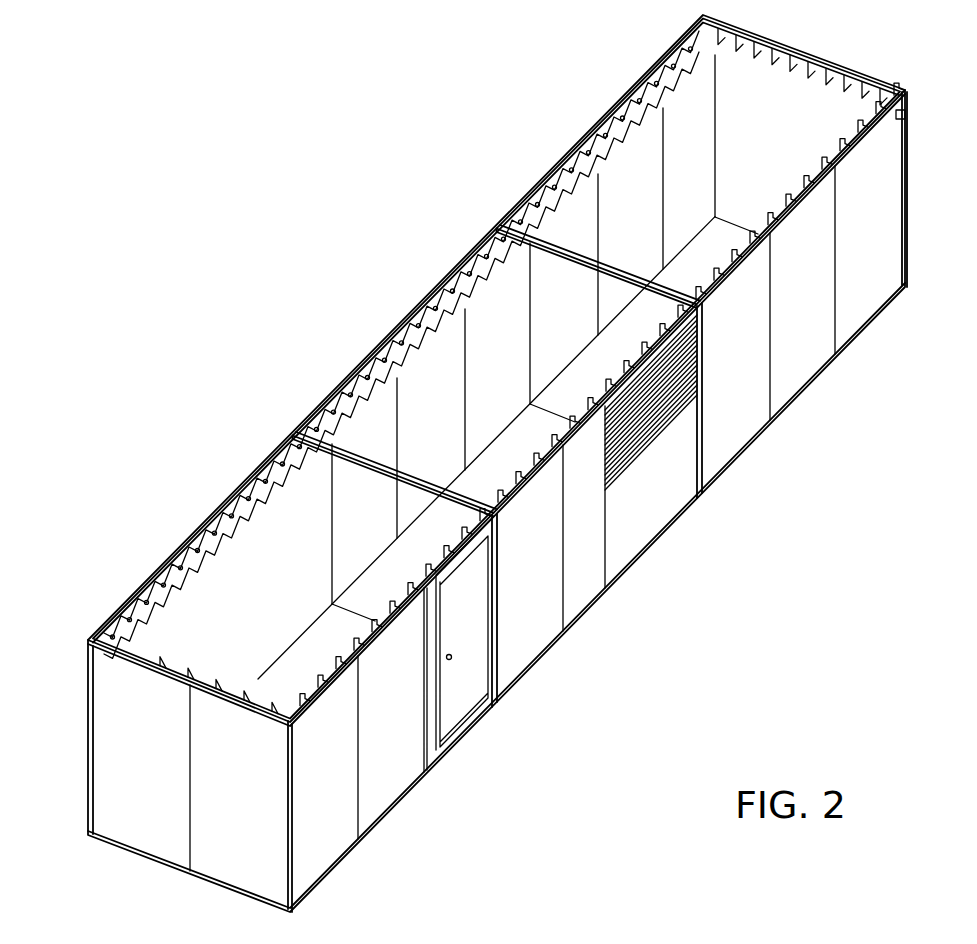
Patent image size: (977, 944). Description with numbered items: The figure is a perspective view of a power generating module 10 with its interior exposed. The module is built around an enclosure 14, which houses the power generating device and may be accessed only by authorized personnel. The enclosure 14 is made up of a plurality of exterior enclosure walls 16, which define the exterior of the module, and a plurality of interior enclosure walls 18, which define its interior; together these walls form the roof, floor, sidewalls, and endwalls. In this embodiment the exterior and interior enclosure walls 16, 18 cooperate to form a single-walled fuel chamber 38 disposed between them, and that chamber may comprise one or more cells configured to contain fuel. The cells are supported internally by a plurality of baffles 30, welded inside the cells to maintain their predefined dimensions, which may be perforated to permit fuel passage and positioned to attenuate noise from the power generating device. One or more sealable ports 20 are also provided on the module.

The power generating module 10 is at (527, 463).
The enclosure 14 is at (497, 463).
The exterior enclosure walls 16 is at (612, 104).
The interior enclosure walls 18 is at (692, 146).
The sealable port 20 is at (908, 116).
The baffles 30 is at (212, 548).
The single-walled fuel chamber 38 is at (400, 352).